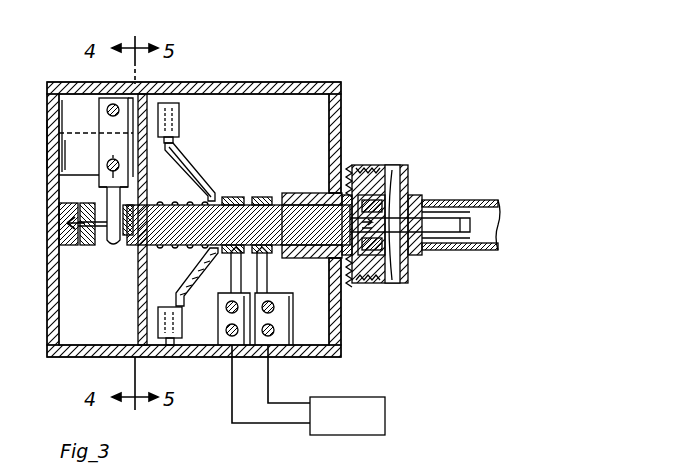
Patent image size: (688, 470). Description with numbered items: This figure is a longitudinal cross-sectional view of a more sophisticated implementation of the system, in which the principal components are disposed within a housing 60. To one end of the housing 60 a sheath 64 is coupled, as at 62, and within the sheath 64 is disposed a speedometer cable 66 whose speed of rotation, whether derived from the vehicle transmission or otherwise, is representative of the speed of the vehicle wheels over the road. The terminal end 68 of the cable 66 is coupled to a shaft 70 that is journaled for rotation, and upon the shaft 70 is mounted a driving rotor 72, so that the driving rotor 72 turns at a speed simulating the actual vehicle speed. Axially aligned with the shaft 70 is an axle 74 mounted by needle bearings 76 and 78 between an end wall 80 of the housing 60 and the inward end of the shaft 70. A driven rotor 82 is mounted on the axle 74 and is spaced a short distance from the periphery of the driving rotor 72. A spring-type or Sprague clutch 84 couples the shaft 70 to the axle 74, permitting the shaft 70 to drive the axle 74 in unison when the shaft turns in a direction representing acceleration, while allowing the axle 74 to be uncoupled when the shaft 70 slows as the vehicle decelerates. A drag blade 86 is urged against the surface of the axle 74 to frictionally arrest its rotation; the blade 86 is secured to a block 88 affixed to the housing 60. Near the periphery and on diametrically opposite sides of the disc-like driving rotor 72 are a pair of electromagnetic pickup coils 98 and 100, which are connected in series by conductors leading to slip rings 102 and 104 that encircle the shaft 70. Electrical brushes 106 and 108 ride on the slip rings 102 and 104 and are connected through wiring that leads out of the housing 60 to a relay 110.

The housing 60 is at (268, 94).
The coupling 62 is at (386, 166).
The sheath 64 is at (452, 204).
The speedometer cable 66 is at (446, 232).
The terminal end 68 is at (382, 284).
The shaft 70 is at (294, 234).
The driving rotor 72 is at (188, 172).
The axle 74 is at (126, 240).
The needle bearing 76 is at (184, 251).
The needle bearing 78 is at (76, 242).
The end wall 80 is at (50, 158).
The driven rotor 82 is at (144, 108).
The spring-type clutch 84 is at (196, 192).
The drag blade 86 is at (106, 248).
The block 88 is at (72, 110).
The electromagnetic pickup coil 98 is at (179, 132).
The electromagnetic pickup coil 100 is at (180, 346).
The slip ring 102 is at (240, 202).
The slip ring 104 is at (276, 198).
The electrical brush 106 is at (214, 300).
The electrical brush 108 is at (266, 274).
The relay 110 is at (354, 400).